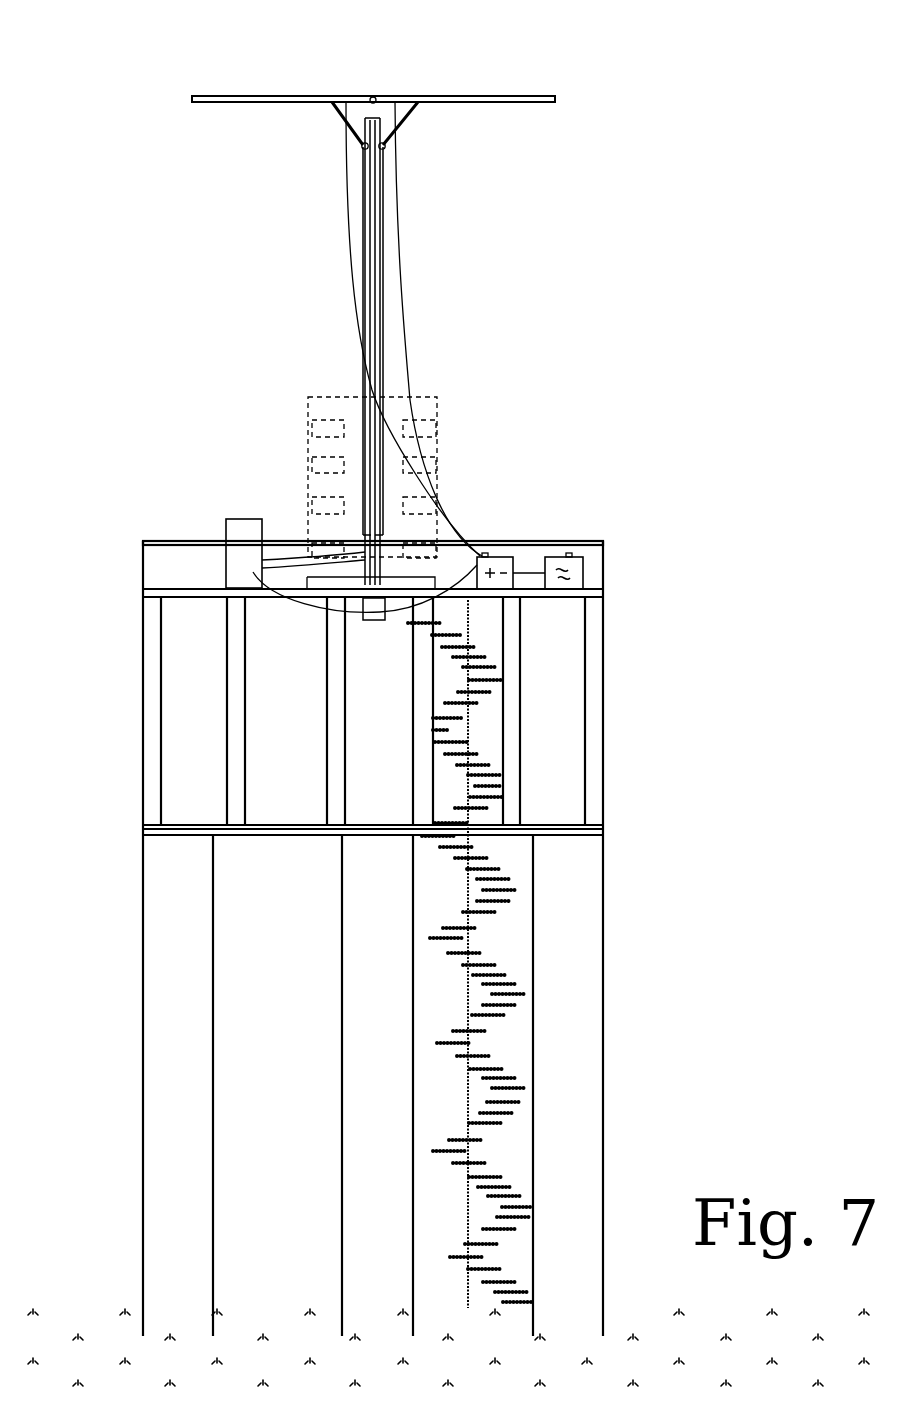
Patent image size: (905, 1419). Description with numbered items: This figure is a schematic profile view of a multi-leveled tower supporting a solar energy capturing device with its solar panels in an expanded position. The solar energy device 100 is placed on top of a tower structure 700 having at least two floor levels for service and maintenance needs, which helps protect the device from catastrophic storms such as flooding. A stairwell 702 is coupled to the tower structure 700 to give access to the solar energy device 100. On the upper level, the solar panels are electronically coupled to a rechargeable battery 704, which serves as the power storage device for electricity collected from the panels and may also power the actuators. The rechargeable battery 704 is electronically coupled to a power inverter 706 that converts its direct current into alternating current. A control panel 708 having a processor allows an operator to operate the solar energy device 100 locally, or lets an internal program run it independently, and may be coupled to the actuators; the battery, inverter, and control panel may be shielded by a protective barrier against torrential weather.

The solar energy device 100 is at (538, 52).
The tower structure 700 is at (140, 733).
The stairwell 702 is at (520, 1229).
The rechargeable battery 704 is at (498, 557).
The power inverter 706 is at (562, 555).
The control panel 708 is at (243, 518).